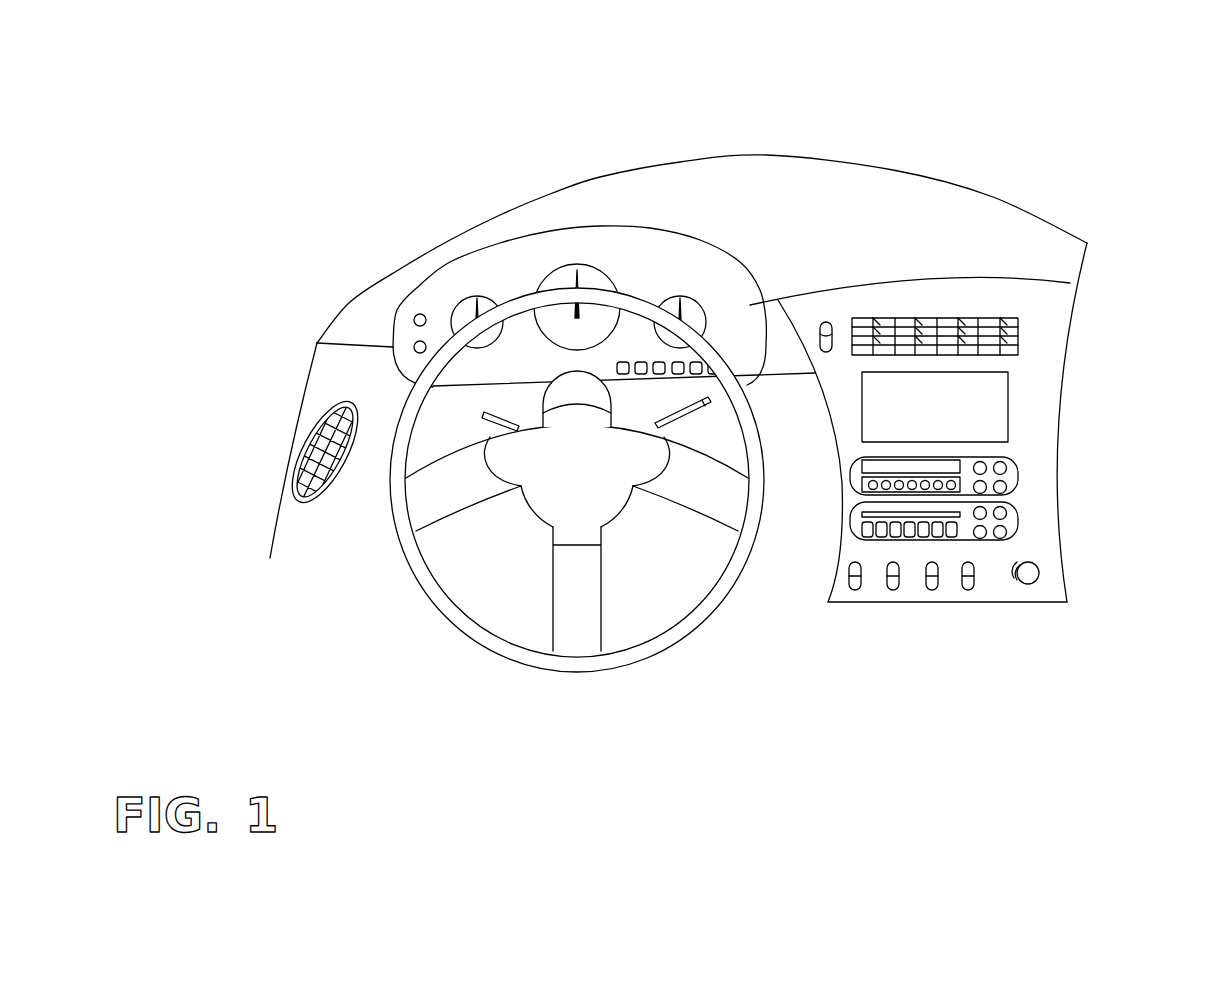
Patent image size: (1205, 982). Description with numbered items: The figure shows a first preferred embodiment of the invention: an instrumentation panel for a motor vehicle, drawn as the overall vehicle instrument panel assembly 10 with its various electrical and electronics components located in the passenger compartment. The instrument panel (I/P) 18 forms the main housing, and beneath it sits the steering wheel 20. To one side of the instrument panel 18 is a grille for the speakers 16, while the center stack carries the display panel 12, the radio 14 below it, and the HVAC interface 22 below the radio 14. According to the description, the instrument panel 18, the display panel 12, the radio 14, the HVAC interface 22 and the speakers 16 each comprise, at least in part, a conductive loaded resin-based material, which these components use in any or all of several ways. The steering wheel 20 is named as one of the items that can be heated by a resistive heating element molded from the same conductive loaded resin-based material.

The dashboard / instrument panel 10 is at (800, 157).
The display panel 12 is at (973, 407).
The radio 14 is at (1010, 462).
The speakers 16 is at (307, 430).
The instrument panel 18 is at (530, 253).
The steering wheel 20 is at (607, 658).
The HVAC interface 22 is at (1010, 520).